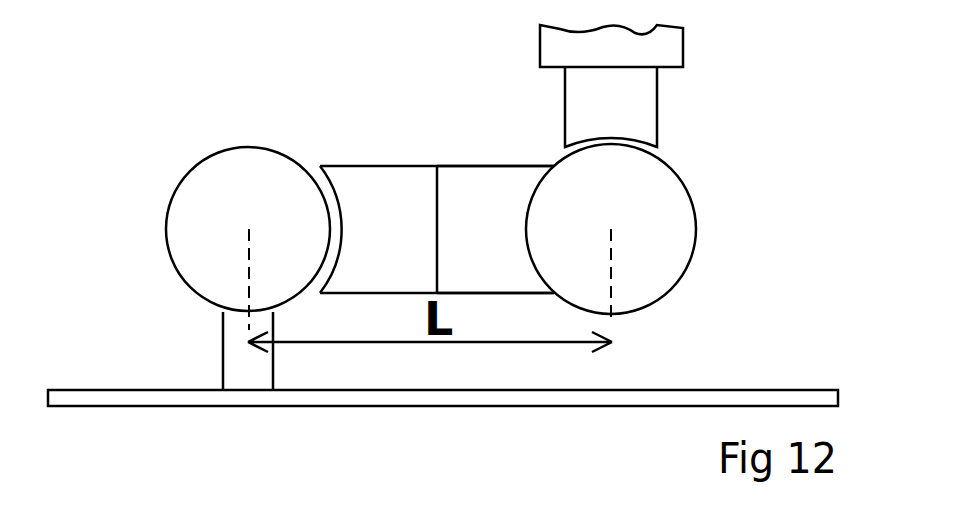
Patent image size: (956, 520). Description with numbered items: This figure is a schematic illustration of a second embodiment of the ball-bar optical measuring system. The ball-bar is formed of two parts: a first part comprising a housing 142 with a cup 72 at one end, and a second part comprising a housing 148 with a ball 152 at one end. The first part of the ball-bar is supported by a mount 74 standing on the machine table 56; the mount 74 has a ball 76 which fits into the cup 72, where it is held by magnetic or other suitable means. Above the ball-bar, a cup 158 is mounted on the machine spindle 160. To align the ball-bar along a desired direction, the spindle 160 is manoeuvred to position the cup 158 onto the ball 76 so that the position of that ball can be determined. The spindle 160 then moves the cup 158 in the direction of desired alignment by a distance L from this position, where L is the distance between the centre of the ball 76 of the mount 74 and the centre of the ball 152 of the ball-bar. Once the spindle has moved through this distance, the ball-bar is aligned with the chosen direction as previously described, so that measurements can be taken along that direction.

The machine table 56 is at (658, 398).
The cup 72 is at (322, 168).
The mount 74 is at (220, 353).
The ball 76 is at (220, 165).
The housing 142 is at (373, 175).
The housing 148 is at (477, 198).
The ball 152 is at (672, 233).
The cup 158 is at (580, 82).
The machine spindle 160 is at (658, 55).